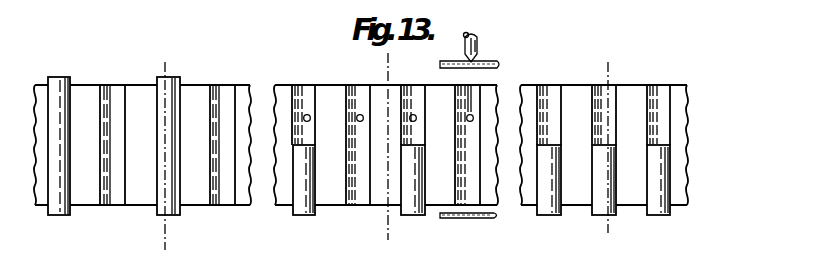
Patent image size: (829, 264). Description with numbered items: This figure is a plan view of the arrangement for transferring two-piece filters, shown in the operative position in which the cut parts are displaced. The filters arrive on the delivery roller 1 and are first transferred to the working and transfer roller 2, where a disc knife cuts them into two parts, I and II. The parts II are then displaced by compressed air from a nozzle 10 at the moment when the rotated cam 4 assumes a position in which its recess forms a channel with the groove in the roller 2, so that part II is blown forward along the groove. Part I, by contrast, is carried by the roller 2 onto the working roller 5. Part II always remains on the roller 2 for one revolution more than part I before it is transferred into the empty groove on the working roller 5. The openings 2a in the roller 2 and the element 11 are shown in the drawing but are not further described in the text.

The delivery roller 1 is at (88, 93).
The working and transfer roller 2 is at (330, 93).
The holes 2a is at (357, 119).
The rotated cam 4 is at (501, 63).
The working roller 5 is at (575, 91).
The nozzle 10 is at (478, 44).
The strip 11 is at (463, 219).